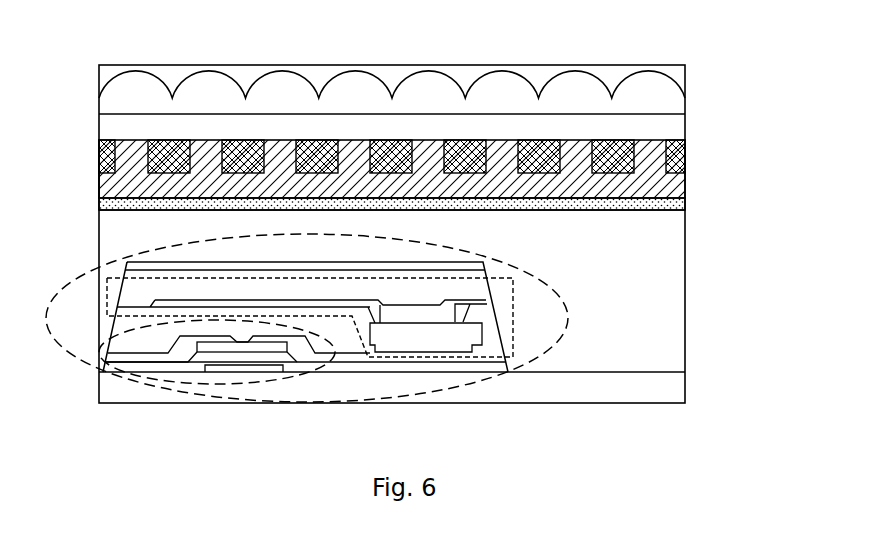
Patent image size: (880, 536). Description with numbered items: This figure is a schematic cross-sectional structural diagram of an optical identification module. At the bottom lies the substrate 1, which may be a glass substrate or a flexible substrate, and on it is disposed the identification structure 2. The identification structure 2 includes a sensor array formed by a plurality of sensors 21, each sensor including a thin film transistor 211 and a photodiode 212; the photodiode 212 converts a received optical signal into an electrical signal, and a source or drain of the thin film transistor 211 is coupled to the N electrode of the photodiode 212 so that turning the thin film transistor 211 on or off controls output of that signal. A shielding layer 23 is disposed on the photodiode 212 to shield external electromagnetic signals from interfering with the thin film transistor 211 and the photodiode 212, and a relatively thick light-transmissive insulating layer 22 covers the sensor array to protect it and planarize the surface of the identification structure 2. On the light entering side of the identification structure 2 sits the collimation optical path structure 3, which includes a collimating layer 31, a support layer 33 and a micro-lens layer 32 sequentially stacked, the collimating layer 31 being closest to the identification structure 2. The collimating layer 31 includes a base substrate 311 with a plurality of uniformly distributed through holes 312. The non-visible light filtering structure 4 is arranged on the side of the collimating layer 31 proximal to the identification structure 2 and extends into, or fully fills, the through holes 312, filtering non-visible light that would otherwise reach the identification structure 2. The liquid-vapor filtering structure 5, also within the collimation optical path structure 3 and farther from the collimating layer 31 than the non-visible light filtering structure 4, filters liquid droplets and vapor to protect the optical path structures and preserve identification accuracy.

The substrate 1 is at (645, 388).
The identification structure 2 is at (384, 324).
The sensor 21 is at (299, 342).
The thin film transistor 211 is at (207, 386).
The photodiode 212 is at (513, 328).
The light-transmissive insulating layer 22 is at (112, 221).
The shielding layer 23 is at (130, 264).
The collimation optical path structure 3 is at (450, 132).
The collimating layer 31 is at (445, 168).
The base substrate 311 is at (675, 152).
The through holes 312 is at (675, 165).
The micro-lens layer 32 is at (685, 88).
The support layer 33 is at (673, 127).
The non-visible light filtering structure 4 is at (99, 180).
The liquid-vapor filtering structure 5 is at (685, 203).